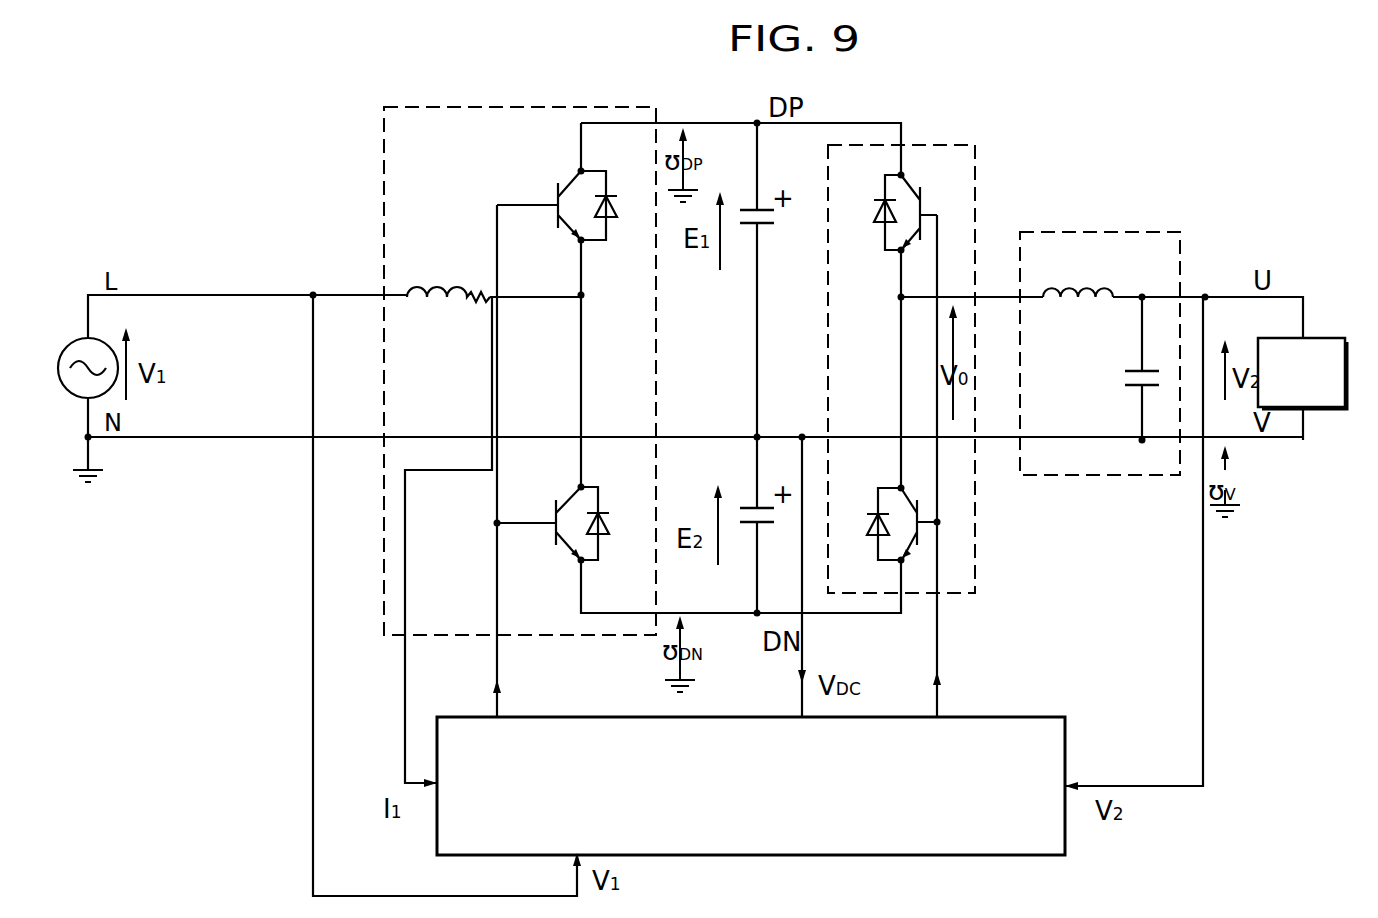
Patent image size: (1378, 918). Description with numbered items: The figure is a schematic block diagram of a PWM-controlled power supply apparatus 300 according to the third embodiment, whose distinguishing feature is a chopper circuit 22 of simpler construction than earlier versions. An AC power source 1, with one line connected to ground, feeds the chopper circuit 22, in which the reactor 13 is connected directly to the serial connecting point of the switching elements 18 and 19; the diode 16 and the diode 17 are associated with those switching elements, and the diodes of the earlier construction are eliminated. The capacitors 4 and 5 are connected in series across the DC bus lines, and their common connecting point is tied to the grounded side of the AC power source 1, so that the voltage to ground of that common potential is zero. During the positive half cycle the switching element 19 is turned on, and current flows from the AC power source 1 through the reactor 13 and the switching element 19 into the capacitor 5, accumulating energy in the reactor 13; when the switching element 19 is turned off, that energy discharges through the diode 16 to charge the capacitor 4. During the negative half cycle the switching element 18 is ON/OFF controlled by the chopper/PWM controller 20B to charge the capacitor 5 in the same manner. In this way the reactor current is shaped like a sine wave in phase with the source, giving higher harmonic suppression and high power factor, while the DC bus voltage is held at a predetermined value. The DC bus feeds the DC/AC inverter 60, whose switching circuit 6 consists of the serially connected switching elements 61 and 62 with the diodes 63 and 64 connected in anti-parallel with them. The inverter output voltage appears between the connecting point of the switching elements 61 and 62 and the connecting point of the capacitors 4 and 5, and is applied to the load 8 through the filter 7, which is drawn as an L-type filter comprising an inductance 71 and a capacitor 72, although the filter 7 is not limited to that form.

The AC power source 1 is at (73, 344).
The reactor 13 is at (445, 282).
The diode 16 is at (620, 204).
The diode 17 is at (610, 525).
The switching element 18 is at (552, 200).
The switching element 19 is at (550, 519).
The chopper circuit 22 is at (630, 107).
The capacitor 4 is at (784, 224).
The capacitor 5 is at (782, 507).
The switching circuit 6 is at (946, 145).
The DC/AC inverter 60 is at (1016, 635).
The switching element 61 is at (926, 212).
The switching element 62 is at (938, 522).
The diode 63 is at (880, 212).
The diode 64 is at (874, 527).
The filter 7 is at (1129, 232).
The inductance 71 is at (1077, 300).
The capacitor 72 is at (1118, 380).
The load 8 is at (1318, 338).
The chopper/PWM controller 20B is at (1018, 717).
The PWM-controlled power supply apparatus 300 is at (1110, 88).